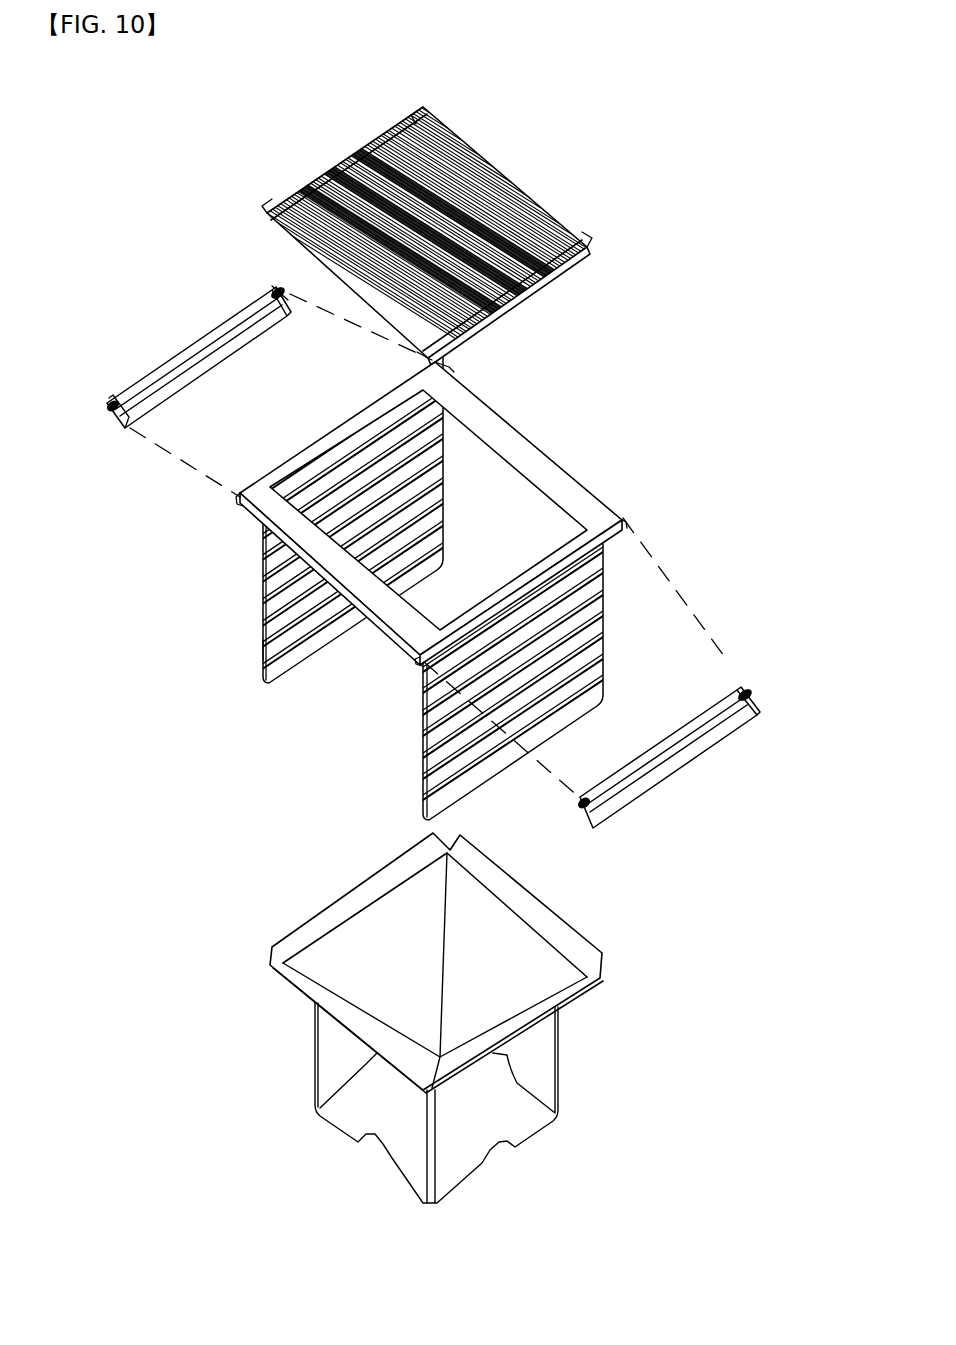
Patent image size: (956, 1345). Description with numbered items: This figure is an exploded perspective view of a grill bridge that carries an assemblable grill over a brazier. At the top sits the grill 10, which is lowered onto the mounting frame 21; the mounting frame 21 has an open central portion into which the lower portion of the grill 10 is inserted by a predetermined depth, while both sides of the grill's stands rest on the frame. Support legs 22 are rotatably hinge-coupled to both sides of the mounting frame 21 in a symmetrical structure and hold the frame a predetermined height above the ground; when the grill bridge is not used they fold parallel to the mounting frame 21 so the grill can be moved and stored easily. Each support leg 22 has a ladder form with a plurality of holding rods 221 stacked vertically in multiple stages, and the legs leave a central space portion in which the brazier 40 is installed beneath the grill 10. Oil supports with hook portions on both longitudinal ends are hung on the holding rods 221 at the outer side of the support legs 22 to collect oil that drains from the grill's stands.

The grill 10 is at (516, 158).
The mounting frame 21 is at (594, 507).
The support leg 22 is at (262, 587).
The holding rod 221 is at (268, 646).
The brazier 40 is at (252, 918).